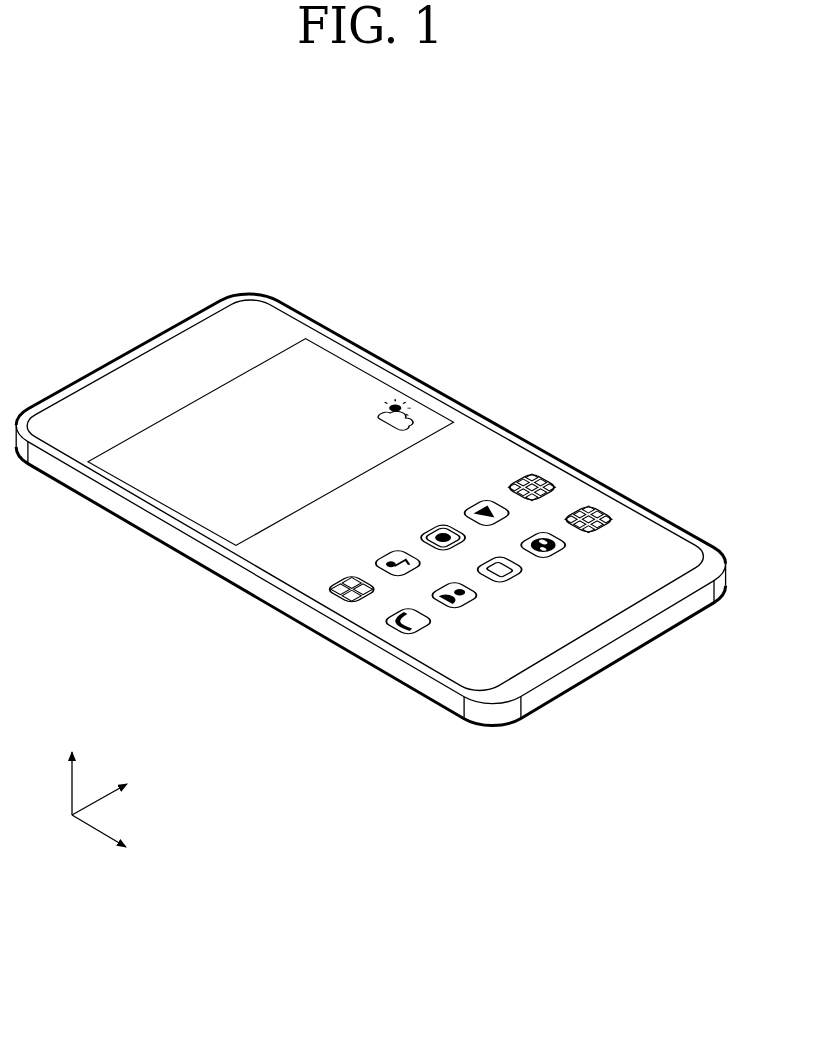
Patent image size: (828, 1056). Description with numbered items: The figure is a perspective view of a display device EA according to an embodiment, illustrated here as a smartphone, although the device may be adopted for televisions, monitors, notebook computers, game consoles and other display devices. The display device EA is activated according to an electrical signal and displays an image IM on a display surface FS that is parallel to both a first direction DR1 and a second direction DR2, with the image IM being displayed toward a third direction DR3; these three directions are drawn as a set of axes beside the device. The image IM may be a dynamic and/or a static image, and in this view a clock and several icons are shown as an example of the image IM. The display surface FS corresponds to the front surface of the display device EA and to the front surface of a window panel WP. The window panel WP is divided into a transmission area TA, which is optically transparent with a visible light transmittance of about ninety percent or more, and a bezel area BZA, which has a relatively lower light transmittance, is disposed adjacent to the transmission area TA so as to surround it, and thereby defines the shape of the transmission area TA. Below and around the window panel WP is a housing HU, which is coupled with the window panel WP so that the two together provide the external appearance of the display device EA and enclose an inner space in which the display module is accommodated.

The display device EA is at (672, 271).
The display surface FS is at (92, 276).
The bezel area BZA is at (206, 311).
The transmission area TA is at (154, 371).
The image IM is at (367, 368).
The window panel WP is at (137, 507).
The housing HU is at (206, 559).
The first direction DR1 is at (125, 841).
The second direction DR2 is at (125, 786).
The third direction DR3 is at (73, 767).